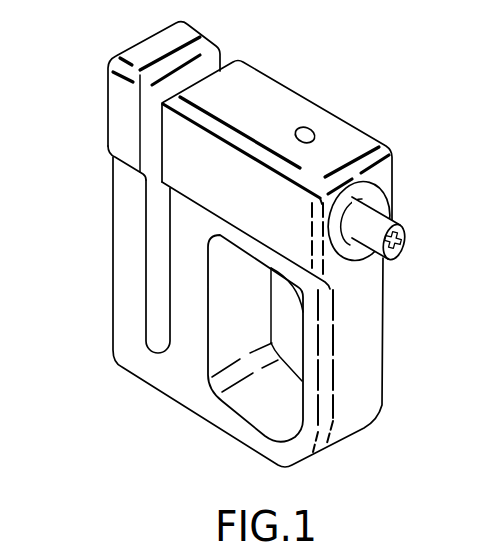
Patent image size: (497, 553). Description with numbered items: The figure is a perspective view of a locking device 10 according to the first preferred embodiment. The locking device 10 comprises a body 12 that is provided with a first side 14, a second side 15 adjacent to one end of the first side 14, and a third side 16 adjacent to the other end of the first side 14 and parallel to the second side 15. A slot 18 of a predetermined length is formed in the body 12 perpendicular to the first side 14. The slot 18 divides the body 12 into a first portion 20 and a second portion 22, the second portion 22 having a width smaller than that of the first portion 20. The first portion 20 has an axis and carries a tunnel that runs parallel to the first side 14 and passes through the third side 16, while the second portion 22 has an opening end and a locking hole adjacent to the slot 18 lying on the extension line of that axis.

The locking device 10 is at (95, 353).
The body 12 is at (181, 356).
The first side 14 is at (270, 96).
The second side 15 is at (113, 195).
The third side 16 is at (375, 334).
The slot 18 is at (150, 240).
The first portion 20 is at (270, 192).
The second portion 22 is at (116, 289).